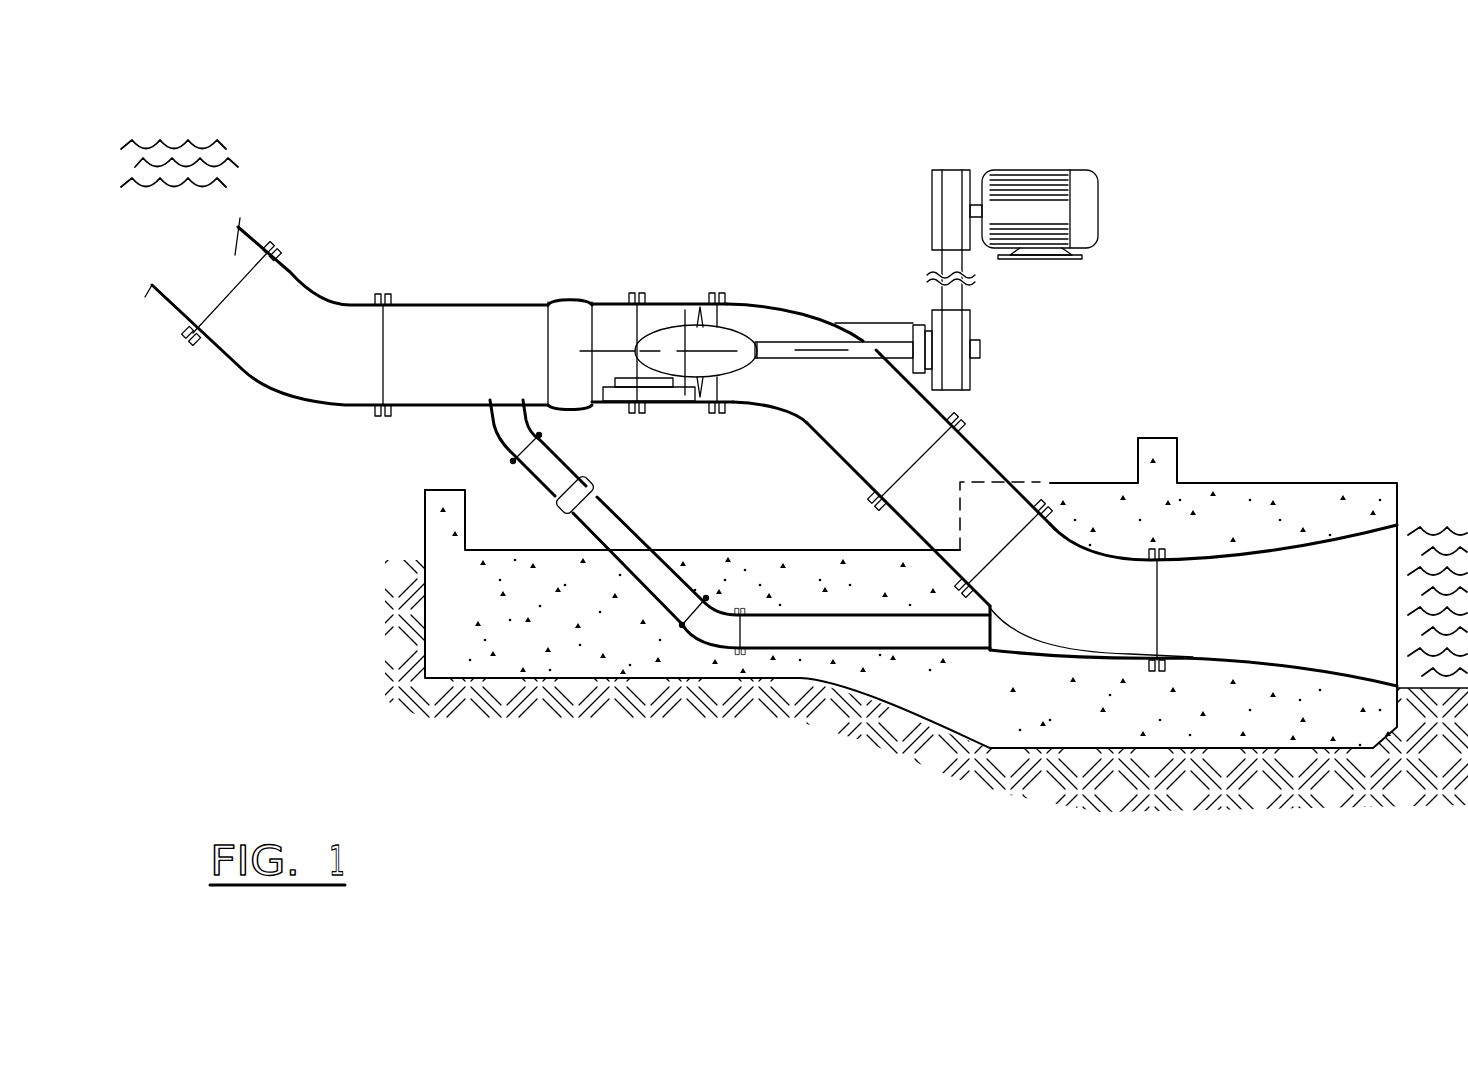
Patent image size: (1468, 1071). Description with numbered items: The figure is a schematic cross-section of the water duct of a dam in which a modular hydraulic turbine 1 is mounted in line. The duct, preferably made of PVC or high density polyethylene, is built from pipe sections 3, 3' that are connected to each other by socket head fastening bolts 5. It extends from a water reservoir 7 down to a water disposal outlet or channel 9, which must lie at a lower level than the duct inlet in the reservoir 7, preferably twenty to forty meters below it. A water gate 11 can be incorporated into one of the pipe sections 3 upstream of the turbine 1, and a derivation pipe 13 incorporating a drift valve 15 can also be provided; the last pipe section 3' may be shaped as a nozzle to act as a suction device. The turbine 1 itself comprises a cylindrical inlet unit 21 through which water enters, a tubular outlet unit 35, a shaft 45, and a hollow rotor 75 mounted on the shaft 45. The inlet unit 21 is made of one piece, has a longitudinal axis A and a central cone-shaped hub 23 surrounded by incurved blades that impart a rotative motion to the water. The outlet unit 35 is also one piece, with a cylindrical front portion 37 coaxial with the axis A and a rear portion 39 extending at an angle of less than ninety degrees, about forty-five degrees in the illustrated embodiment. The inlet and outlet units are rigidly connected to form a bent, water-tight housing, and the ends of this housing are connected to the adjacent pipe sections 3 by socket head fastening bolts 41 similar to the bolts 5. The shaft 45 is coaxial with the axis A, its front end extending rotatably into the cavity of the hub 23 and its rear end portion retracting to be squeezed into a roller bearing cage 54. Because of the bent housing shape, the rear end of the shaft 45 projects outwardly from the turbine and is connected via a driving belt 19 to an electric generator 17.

The modular hydraulic turbine 1 is at (878, 500).
The pipe section 3 is at (634, 386).
The last pipe section 3' is at (1193, 544).
The socket head fastening bolt 5 is at (377, 420).
The water reservoir 7 is at (160, 140).
The water disposal outlet or channel 9 is at (1443, 527).
The water gate 11 is at (567, 318).
The derivation pipe 13 is at (540, 456).
The drift valve 15 is at (583, 485).
The electric generator 17 is at (1048, 203).
The driving belt 19 is at (953, 177).
The cylindrical inlet unit 21 is at (676, 290).
The central cone-shaped hub 23 is at (655, 335).
The tubular outlet unit 35 is at (801, 435).
The front portion 37 is at (740, 325).
The rear portion 39 is at (943, 400).
The socket head fastening bolt 41 is at (717, 287).
The shaft 45 is at (802, 332).
The roller bearing cage 54 is at (872, 310).
The hollow rotor 75 is at (715, 290).
The longitudinal axis A is at (758, 348).